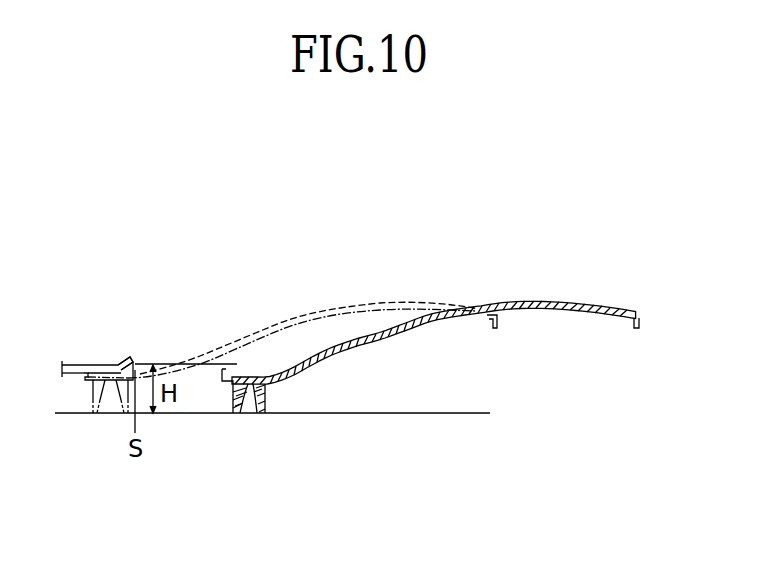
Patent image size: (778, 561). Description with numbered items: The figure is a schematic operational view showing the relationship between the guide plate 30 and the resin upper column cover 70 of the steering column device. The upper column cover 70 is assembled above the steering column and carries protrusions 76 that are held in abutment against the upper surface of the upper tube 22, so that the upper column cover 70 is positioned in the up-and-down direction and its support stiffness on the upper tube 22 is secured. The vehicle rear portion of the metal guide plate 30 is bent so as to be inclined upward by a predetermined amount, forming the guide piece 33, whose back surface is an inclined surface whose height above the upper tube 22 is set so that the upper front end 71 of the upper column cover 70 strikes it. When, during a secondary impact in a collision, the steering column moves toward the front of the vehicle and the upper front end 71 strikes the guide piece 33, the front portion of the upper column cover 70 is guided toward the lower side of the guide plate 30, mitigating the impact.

The upper tube 22 is at (432, 412).
The guide plate 30 is at (77, 365).
The guide piece 33 is at (127, 362).
The upper column cover 70 is at (380, 302).
The upper front end 71 is at (227, 368).
The protrusions 76 is at (257, 398).